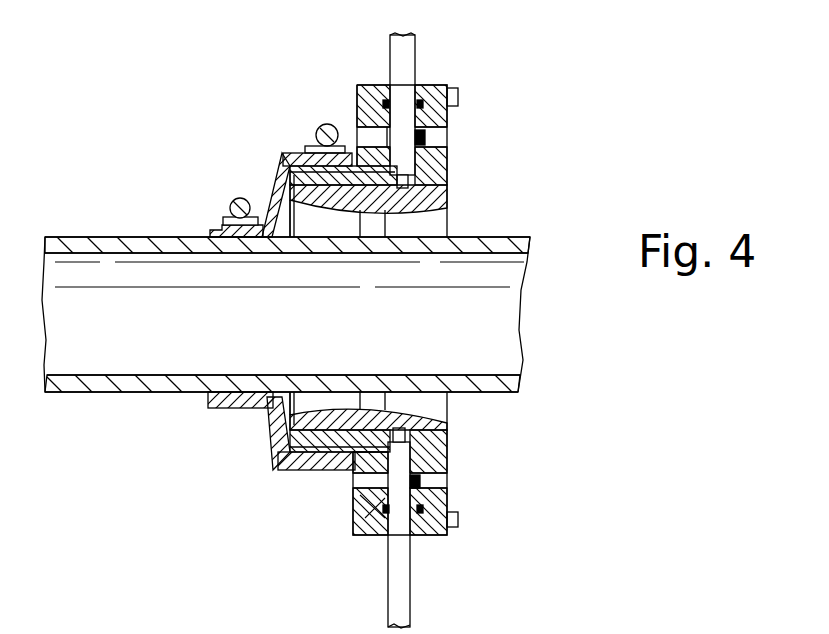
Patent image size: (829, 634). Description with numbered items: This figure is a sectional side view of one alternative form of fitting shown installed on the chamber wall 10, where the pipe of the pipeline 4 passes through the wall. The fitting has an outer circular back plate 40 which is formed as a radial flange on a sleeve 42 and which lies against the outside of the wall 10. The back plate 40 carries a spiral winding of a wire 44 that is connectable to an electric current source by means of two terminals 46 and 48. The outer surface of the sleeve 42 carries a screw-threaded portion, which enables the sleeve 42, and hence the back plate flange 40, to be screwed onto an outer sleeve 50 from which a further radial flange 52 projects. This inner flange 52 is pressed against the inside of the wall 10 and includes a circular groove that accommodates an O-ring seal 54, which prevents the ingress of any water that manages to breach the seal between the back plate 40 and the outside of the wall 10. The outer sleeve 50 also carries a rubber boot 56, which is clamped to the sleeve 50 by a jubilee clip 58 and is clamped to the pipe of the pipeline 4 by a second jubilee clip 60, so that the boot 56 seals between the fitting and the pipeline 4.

The pipeline 4 is at (118, 237).
The chamber wall 10 is at (390, 42).
The outer circular back plate 40 is at (434, 84).
The sleeve 42 is at (268, 435).
The wire 44 is at (440, 166).
The terminal 46 is at (460, 95).
The terminal 48 is at (460, 520).
The outer sleeve 50 is at (300, 178).
The radial flange 52 is at (358, 92).
The O-ring seal 54 is at (357, 513).
The rubber boot 56 is at (280, 470).
The jubilee clip 58 is at (318, 128).
The jubilee clip 60 is at (229, 203).